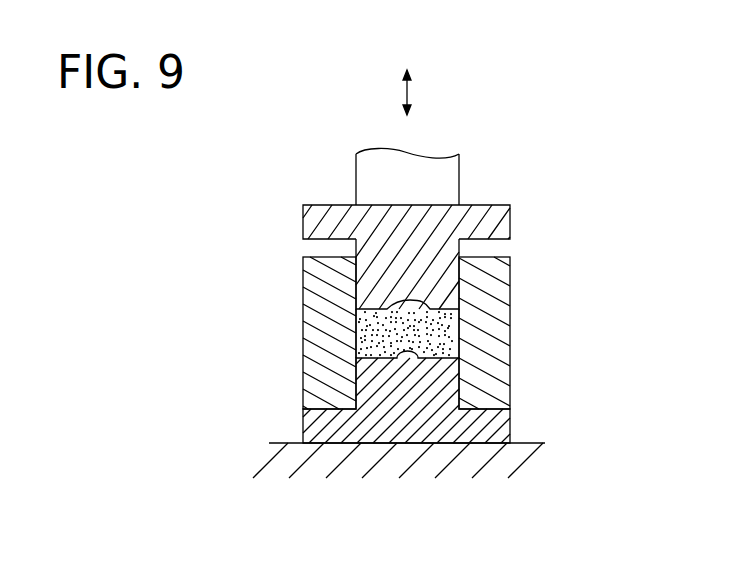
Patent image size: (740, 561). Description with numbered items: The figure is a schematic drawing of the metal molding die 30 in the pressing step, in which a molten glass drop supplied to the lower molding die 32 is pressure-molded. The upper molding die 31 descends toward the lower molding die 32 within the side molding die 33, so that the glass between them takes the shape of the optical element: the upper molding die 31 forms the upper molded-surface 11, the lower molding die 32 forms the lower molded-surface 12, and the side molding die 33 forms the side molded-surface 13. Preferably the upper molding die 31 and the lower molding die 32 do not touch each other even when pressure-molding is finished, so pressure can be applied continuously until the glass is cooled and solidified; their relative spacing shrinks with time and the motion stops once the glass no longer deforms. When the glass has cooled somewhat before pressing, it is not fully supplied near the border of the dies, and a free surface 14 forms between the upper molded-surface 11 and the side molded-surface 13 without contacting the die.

The metal molding die 30 is at (321, 136).
The upper molding die 31 is at (494, 218).
The upper molded-surface 11 is at (380, 303).
The free surface 14 is at (357, 313).
The side molding die 33 is at (494, 305).
The lower molding die 32 is at (443, 387).
The lower molded-surface 12 is at (390, 360).
The side molded-surface 13 is at (356, 347).